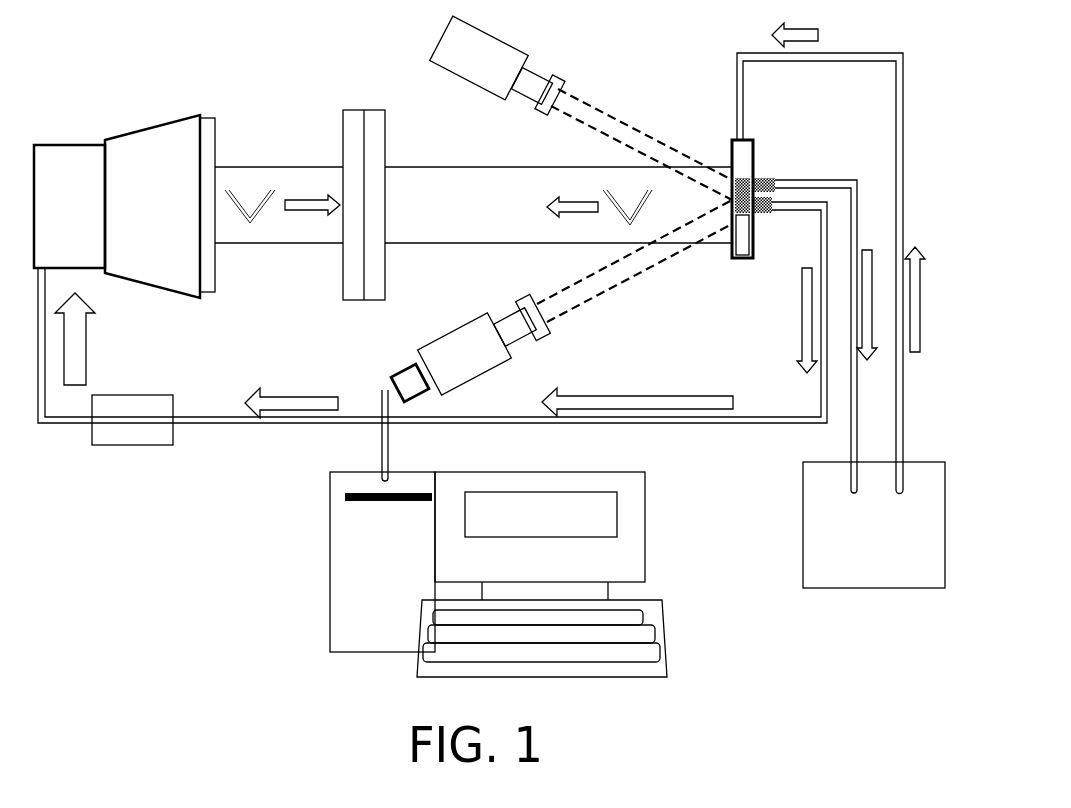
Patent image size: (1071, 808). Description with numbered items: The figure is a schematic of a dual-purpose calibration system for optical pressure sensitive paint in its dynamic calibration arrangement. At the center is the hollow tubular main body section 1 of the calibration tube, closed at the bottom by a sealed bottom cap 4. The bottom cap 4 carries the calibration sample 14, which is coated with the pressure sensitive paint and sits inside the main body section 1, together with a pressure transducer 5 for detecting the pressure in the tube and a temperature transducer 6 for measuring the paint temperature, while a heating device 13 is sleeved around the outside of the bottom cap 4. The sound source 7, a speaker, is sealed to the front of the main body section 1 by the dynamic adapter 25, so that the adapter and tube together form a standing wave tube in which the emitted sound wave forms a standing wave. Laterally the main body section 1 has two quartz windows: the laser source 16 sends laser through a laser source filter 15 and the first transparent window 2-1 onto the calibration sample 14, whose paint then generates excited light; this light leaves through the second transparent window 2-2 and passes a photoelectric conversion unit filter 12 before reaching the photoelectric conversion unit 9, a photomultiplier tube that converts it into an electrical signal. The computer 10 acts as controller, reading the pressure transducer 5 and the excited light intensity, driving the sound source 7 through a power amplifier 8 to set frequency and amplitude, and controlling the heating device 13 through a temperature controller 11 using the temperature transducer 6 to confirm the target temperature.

The main body section 1 is at (467, 183).
The dynamic adapter 25 is at (293, 166).
The sound source 7 is at (124, 206).
The laser source 16 is at (491, 60).
The laser source filter 15 is at (568, 90).
The first transparent window 2-1 is at (677, 165).
The second transparent window 2-2 is at (672, 243).
The photoelectric conversion unit 9 is at (459, 394).
The photoelectric conversion unit filter 12 is at (554, 320).
The bottom cap 4 is at (742, 262).
The calibration sample 14 is at (727, 210).
The heating device 13 is at (746, 236).
The temperature transducer 6 is at (776, 178).
The pressure transducer 5 is at (776, 210).
The power amplifier 8 is at (132, 420).
The computer 10 is at (498, 574).
The temperature controller 11 is at (874, 525).